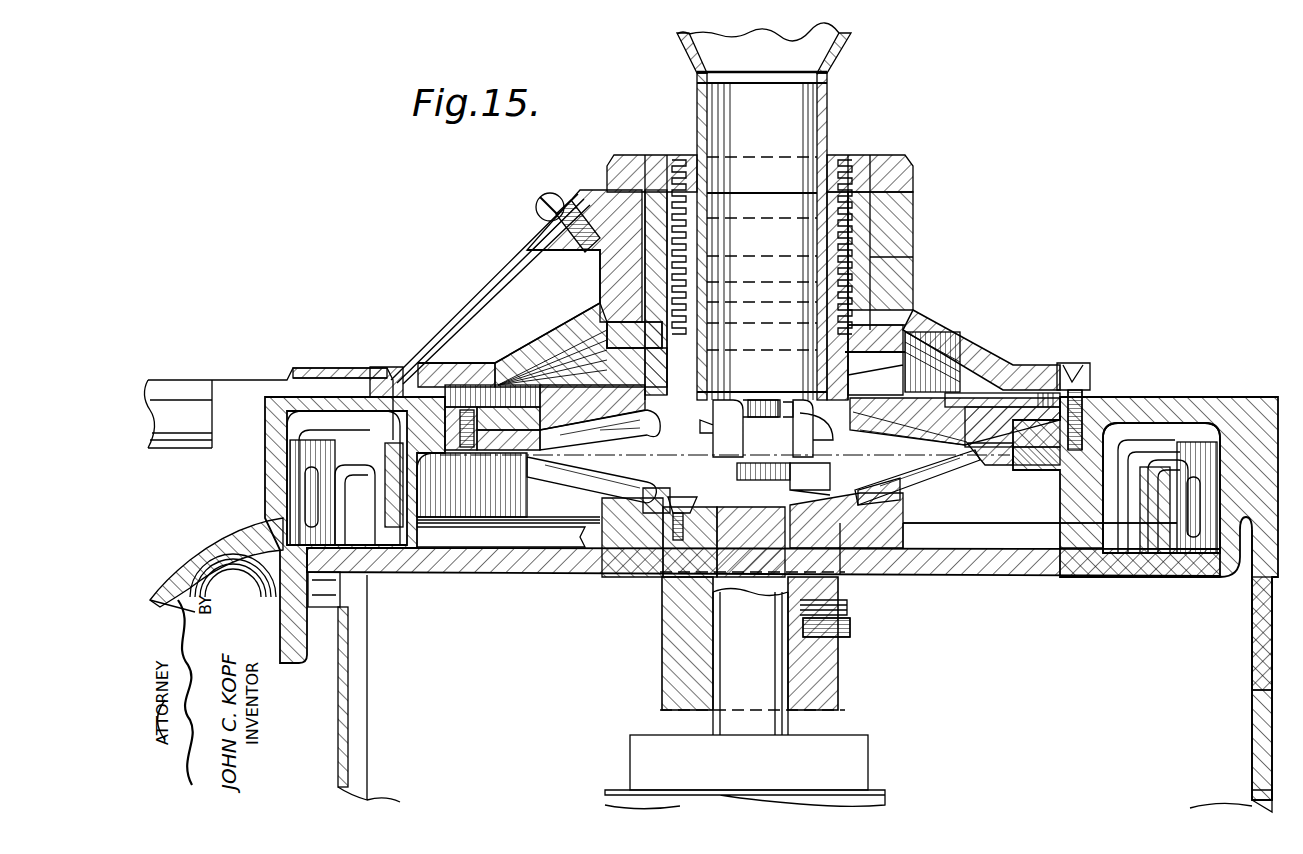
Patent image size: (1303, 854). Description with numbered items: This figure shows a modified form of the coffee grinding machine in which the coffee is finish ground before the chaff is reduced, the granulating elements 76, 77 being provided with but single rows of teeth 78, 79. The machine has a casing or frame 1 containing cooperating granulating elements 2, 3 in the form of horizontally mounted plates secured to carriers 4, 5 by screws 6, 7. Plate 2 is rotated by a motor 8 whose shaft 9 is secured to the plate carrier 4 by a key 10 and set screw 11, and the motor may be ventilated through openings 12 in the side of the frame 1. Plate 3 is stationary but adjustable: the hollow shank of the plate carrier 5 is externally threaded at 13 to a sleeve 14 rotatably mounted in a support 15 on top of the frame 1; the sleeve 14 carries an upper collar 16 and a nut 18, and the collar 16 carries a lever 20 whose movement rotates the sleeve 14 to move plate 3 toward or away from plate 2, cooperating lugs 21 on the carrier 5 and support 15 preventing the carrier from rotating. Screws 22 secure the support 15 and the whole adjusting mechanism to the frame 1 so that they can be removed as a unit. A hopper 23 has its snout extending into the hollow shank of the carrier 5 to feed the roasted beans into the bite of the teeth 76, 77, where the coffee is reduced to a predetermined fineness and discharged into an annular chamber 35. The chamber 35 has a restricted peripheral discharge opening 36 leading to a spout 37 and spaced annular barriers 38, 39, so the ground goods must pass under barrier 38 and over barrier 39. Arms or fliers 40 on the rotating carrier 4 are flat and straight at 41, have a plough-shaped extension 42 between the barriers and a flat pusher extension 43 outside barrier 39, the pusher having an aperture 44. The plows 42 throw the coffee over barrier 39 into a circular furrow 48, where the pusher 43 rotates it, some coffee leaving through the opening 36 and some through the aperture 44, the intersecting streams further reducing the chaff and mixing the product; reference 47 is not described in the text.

The casing or frame 1 is at (1113, 400).
The granulating element 2 is at (942, 485).
The granulating element 3 is at (998, 462).
The carrier 4 is at (890, 515).
The carrier 5 is at (858, 392).
The screw 6 is at (692, 512).
The screw 7 is at (1032, 452).
The motor 8 is at (858, 760).
The shaft 9 is at (750, 662).
The key 10 is at (795, 680).
The set screw 11 is at (852, 627).
The openings 12 is at (1262, 713).
The external thread 13 is at (830, 252).
The sleeve 14 is at (655, 172).
The support 15 is at (928, 328).
The upper collar 16 is at (914, 208).
The nut 18 is at (880, 165).
The lever 20 is at (468, 312).
The lugs 21 is at (935, 362).
The screws 22 is at (1068, 364).
The hopper 23 is at (853, 40).
The annular chamber 35 is at (1145, 430).
The peripheral discharge opening 36 is at (283, 548).
The spout 37 is at (198, 548).
The annular barrier 38 is at (1095, 550).
The annular barrier 39 is at (1150, 530).
The arms or fliers 40 is at (993, 572).
The flat straight portion 41 is at (548, 540).
The plough-shaped extension 42 is at (397, 430).
The pusher extension 43 is at (298, 470).
The aperture 44 is at (1195, 548).
The bottom band 47 is at (1034, 572).
The circular channel or furrow 48 is at (1158, 548).
The granulating element 76 is at (830, 502).
The granulating element 77 is at (830, 418).
The teeth 78 is at (658, 480).
The teeth 79 is at (658, 436).